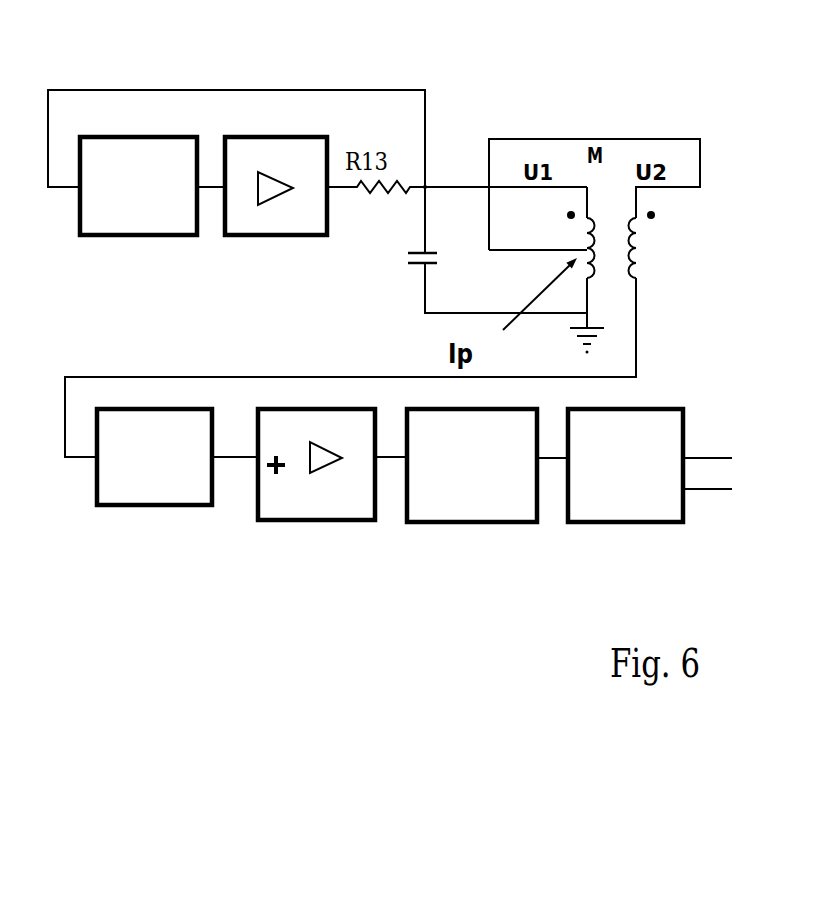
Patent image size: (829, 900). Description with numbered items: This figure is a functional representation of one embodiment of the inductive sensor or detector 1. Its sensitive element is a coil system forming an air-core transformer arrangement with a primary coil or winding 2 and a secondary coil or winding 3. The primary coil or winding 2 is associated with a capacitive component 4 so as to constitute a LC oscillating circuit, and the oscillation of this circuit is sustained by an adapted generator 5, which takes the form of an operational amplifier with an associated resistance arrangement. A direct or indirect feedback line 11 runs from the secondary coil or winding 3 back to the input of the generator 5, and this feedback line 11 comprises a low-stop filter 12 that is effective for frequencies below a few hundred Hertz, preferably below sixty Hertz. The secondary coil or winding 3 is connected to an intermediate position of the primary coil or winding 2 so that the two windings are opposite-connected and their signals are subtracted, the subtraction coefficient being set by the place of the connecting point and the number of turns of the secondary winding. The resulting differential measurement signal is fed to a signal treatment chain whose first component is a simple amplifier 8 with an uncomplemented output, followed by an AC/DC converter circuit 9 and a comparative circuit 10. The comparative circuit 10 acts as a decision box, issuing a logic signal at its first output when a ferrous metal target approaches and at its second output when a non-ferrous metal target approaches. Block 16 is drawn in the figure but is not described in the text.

The sensor or detector 1 is at (179, 638).
The primary coil or winding 2 is at (606, 276).
The secondary coil or winding 3 is at (663, 274).
The capacitive component 4 is at (395, 273).
The generator 5 is at (273, 246).
The amplifier 8 is at (317, 531).
The AC/DC converter circuit 9 is at (472, 532).
The comparative circuit 10 is at (627, 532).
The feedback line 11 is at (236, 80).
The low-stop filter 12 is at (135, 246).
The input block 16 is at (154, 516).